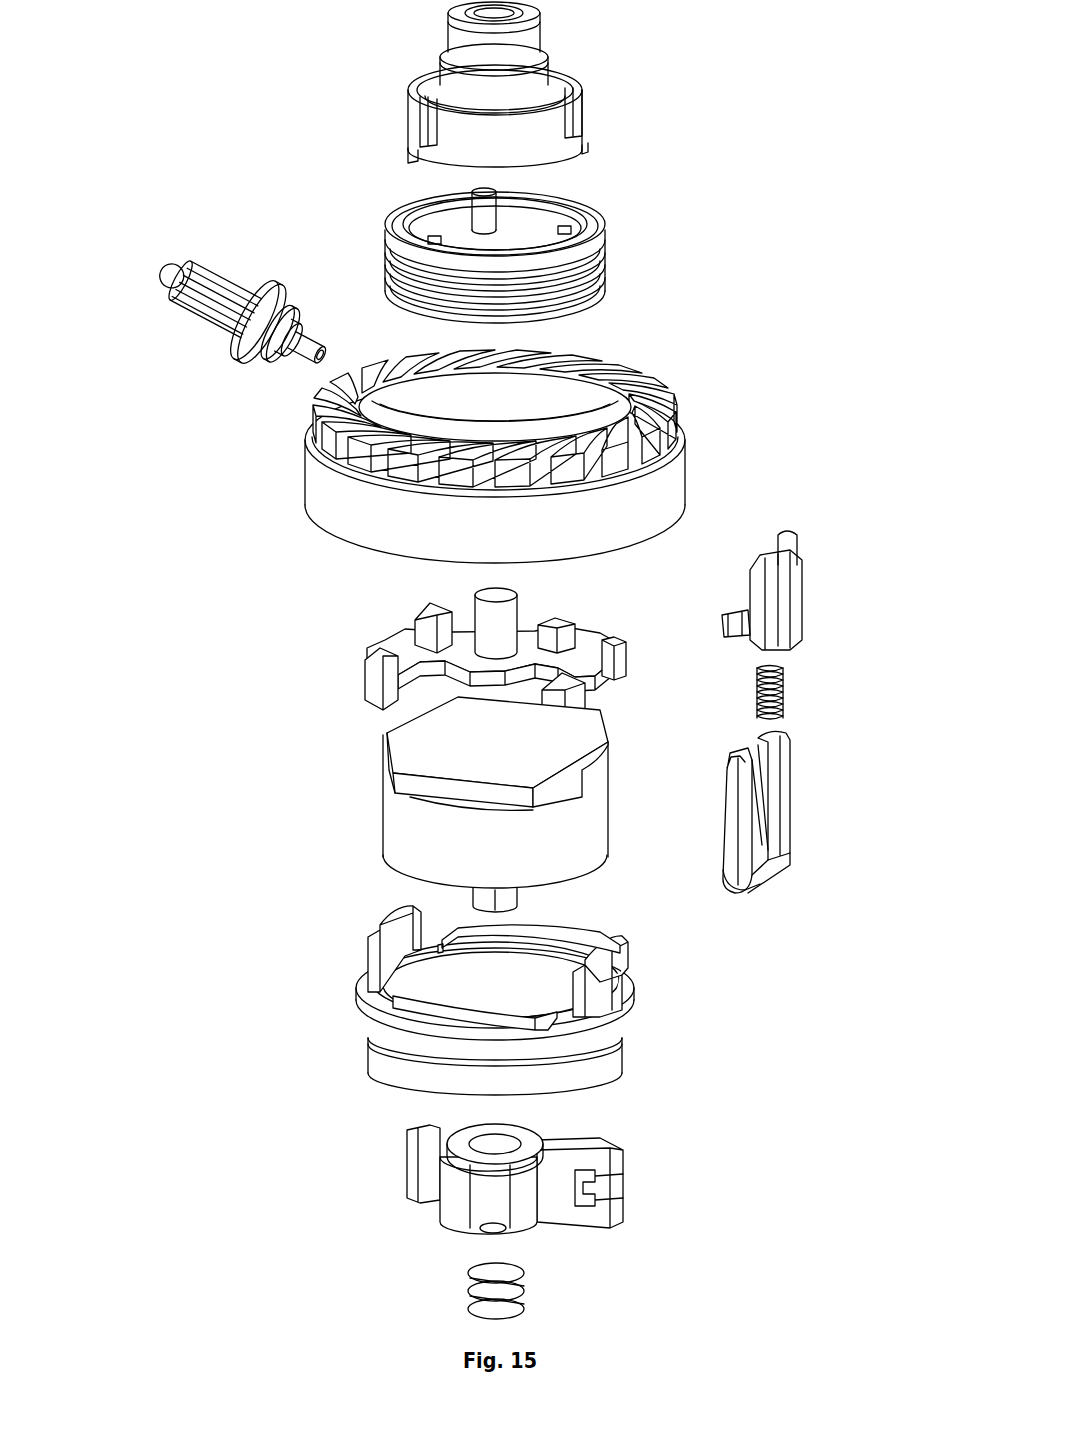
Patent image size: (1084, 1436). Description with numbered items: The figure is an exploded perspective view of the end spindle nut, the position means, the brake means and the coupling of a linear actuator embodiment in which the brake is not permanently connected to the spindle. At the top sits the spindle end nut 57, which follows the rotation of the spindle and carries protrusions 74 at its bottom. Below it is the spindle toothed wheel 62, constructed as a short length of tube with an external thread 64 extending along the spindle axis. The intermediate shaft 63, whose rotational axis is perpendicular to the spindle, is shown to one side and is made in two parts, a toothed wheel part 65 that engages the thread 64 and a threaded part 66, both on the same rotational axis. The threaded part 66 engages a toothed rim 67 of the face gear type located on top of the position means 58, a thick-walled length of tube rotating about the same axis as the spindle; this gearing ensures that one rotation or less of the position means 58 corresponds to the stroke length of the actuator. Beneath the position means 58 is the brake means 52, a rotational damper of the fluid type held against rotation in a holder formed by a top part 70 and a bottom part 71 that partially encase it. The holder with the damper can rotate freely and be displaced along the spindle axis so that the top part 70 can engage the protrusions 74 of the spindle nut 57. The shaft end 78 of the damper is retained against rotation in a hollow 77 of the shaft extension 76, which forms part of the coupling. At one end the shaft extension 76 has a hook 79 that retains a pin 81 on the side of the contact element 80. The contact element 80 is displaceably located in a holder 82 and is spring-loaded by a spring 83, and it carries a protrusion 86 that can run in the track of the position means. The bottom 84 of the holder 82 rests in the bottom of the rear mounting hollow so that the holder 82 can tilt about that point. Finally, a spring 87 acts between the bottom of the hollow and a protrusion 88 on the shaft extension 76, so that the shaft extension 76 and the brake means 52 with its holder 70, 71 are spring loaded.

The spindle end nut 57 is at (508, 91).
The protrusions 74 is at (413, 160).
The spindle toothed wheel 62 is at (548, 255).
The external thread 64 is at (600, 281).
The intermediate shaft 63 is at (219, 301).
The toothed wheel part 65 is at (213, 297).
The threaded part 66 is at (270, 328).
The position means 58 is at (478, 456).
The toothed rim 67 is at (672, 405).
The top part 70 is at (345, 658).
The brake means 52 is at (454, 808).
The shaft end 78 is at (505, 902).
The bottom part 71 is at (328, 992).
The shaft extension 76 is at (506, 1167).
The hollow 77 is at (508, 1143).
The hook 79 is at (608, 1213).
The protrusion 88 is at (490, 1232).
The spring 87 is at (522, 1303).
The contact element 80 is at (794, 579).
The protrusion 86 is at (797, 534).
The pin 81 is at (722, 616).
The spring 83 is at (783, 698).
The holder 82 is at (808, 825).
The bottom 84 is at (748, 892).